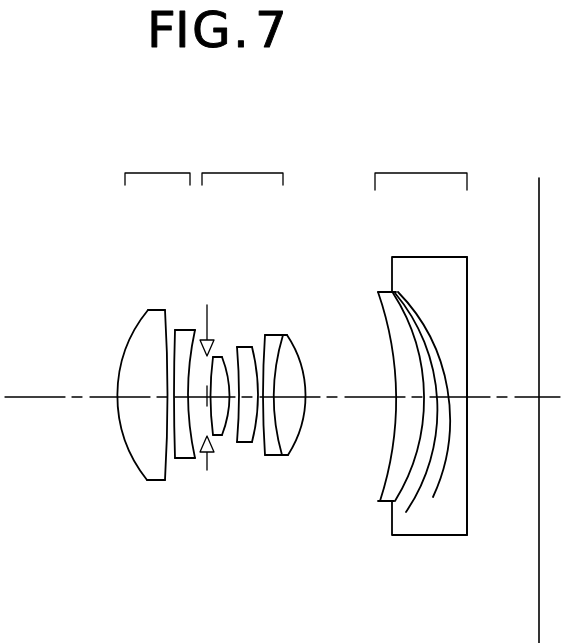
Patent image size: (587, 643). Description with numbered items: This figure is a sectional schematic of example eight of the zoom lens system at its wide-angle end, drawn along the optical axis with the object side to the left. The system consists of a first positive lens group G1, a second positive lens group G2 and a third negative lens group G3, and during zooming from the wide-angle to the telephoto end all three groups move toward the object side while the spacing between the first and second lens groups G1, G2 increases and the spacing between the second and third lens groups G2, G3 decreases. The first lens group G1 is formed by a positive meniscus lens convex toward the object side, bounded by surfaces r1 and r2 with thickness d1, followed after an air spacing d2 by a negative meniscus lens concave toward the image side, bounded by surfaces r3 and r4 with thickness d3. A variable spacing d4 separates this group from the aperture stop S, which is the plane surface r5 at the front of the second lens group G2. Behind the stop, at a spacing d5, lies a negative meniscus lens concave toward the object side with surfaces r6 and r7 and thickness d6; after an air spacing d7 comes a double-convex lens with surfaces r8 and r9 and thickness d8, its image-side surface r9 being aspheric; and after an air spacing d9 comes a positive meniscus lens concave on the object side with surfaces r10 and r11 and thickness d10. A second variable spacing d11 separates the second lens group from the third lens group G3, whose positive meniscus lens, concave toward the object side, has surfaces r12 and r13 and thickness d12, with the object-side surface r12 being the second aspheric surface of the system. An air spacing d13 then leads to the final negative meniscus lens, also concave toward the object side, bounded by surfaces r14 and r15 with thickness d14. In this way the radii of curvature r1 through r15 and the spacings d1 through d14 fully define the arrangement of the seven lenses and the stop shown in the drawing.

The first positive lens group G1 is at (157, 157).
The second positive lens group G2 is at (242, 157).
The third negative lens group G3 is at (421, 160).
The aperture stop S is at (207, 322).
The radius of curvature of first lens surface r1 is at (130, 337).
The radius of curvature of second lens surface r2 is at (160, 343).
The radius of curvature of third lens surface r3 is at (175, 328).
The radius of curvature of fourth lens surface r4 is at (188, 332).
The radius of curvature of fifth surface (stop) r5 is at (214, 354).
The radius of curvature of sixth lens surface r6 is at (227, 354).
The radius of curvature of seventh lens surface r7 is at (239, 346).
The radius of curvature of eighth lens surface r8 is at (251, 345).
The radius of curvature of ninth lens surface r9 is at (263, 342).
The radius of curvature of tenth lens surface r10 is at (285, 337).
The radius of curvature of eleventh lens surface r11 is at (300, 357).
The radius of curvature of twelfth lens surface r12 is at (378, 318).
The radius of curvature of thirteenth lens surface r13 is at (388, 290).
The radius of curvature of fourteenth lens surface r14 is at (405, 315).
The radius of curvature of fifteenth lens surface r15 is at (467, 285).
The spacing between first and second lens surfaces d1 is at (138, 396).
The spacing between second and third lens surfaces d2 is at (171, 410).
The spacing between third and fourth lens surfaces d3 is at (184, 412).
The spacing between fourth lens surface and stop d4 is at (197, 420).
The spacing between stop and sixth lens surface d5 is at (220, 420).
The spacing between sixth and seventh lens surfaces d6 is at (233, 420).
The spacing between seventh and eighth lens surfaces d7 is at (244, 420).
The spacing between eighth and ninth lens surfaces d8 is at (258, 443).
The spacing between ninth and tenth lens surfaces d9 is at (274, 445).
The spacing between tenth and eleventh lens surfaces d10 is at (284, 440).
The spacing between eleventh and twelfth lens surfaces d11 is at (350, 419).
The spacing between twelfth and thirteenth lens surfaces d12 is at (405, 412).
The spacing between thirteenth and fourteenth lens surfaces d13 is at (408, 477).
The spacing between fourteenth and fifteenth lens surfaces d14 is at (443, 440).